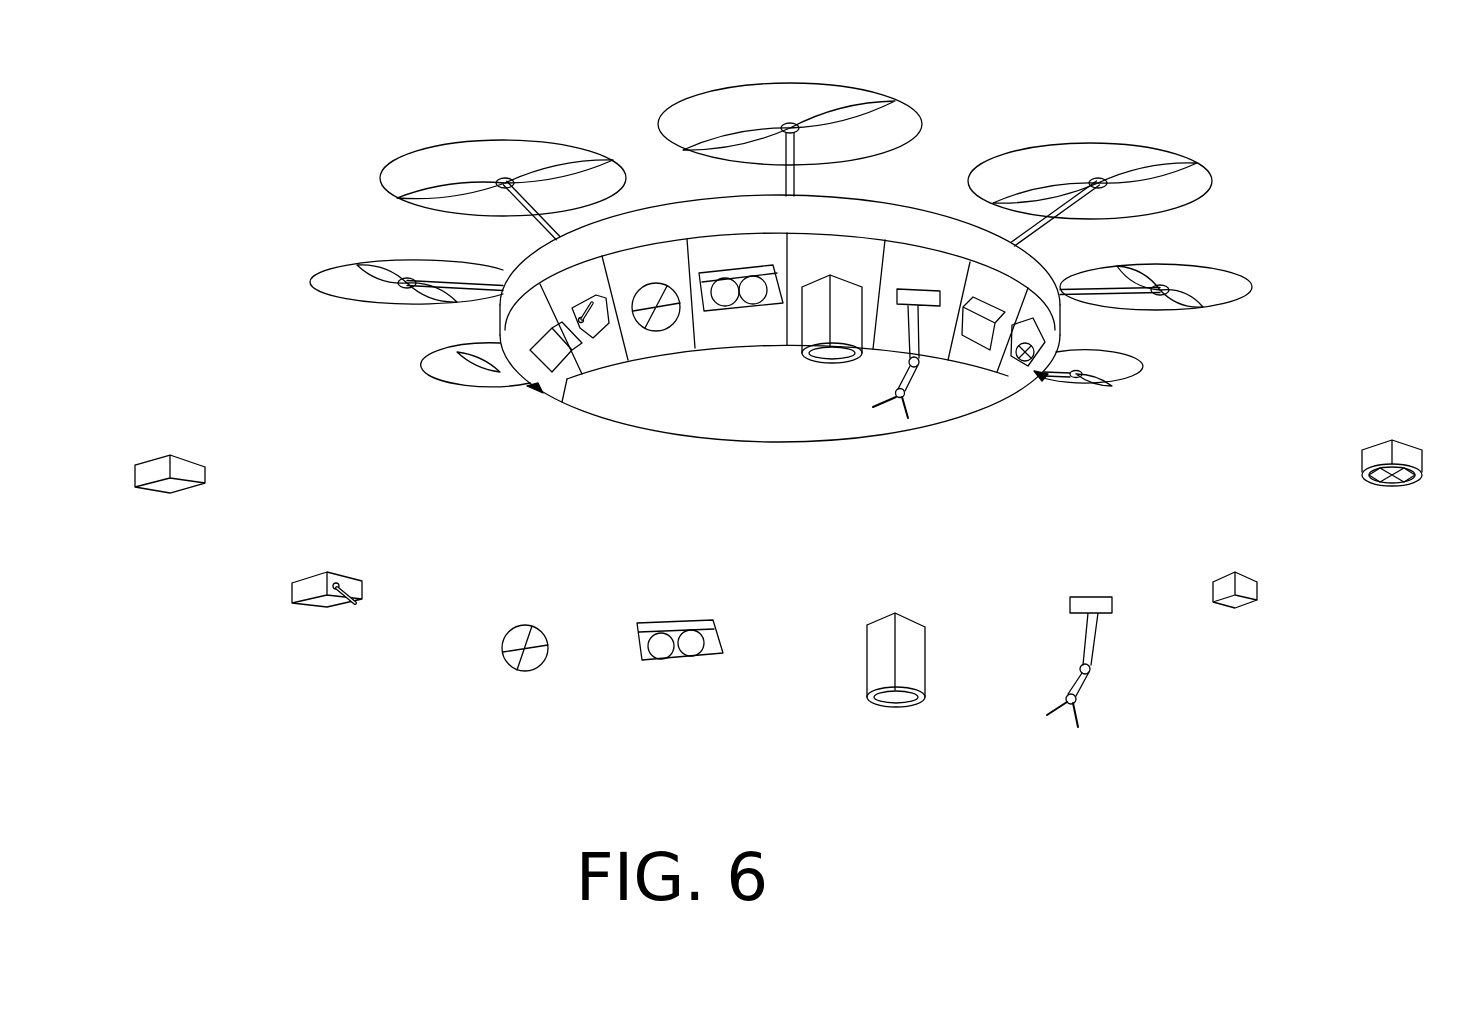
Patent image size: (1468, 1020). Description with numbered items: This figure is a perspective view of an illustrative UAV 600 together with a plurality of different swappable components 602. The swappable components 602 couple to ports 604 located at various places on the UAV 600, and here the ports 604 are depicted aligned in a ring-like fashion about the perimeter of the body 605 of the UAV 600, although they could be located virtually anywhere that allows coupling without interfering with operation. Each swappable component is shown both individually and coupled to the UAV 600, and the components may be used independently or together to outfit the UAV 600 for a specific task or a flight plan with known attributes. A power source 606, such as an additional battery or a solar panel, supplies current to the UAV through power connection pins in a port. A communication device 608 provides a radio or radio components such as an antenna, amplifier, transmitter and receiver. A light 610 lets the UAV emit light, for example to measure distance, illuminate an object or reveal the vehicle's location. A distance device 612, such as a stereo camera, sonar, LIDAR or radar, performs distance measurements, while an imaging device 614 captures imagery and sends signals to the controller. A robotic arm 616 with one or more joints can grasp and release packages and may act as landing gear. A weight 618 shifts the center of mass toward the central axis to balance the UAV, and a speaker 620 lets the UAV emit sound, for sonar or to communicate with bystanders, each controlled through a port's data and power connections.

The UAV 600 is at (725, 245).
The swappable components 602 is at (163, 388).
The ports 604 is at (552, 289).
The body 605 is at (692, 218).
The power source 606 is at (516, 356).
The communication device 608 is at (575, 354).
The light 610 is at (643, 352).
The distance device 612 is at (736, 327).
The imaging device 614 is at (840, 385).
The robotic arm 616 is at (926, 391).
The weight 618 is at (984, 362).
The speaker 620 is at (1059, 342).